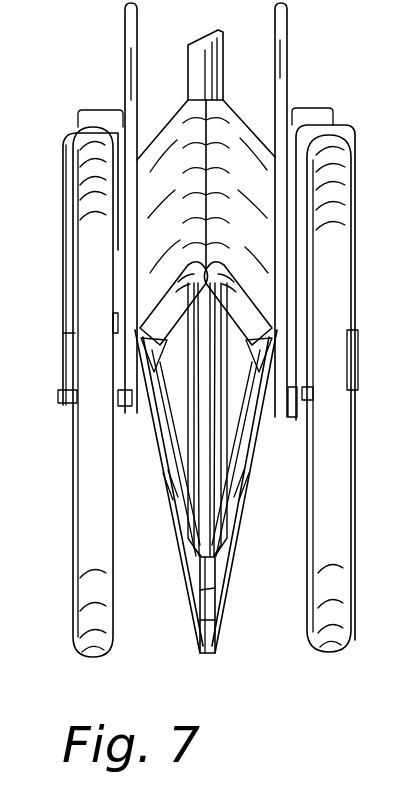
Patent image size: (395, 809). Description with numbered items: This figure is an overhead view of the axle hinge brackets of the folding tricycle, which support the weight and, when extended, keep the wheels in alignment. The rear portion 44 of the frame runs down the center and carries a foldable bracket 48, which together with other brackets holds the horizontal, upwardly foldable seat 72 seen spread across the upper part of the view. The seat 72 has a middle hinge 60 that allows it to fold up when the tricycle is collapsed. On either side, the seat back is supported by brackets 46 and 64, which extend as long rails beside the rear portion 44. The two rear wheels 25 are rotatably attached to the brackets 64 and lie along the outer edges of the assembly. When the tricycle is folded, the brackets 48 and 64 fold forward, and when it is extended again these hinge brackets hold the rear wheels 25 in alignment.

The rear wheels 25 is at (85, 542).
The rear portion 44 is at (200, 422).
The brackets 46 is at (126, 60).
The foldable bracket 48 is at (200, 655).
The middle hinge 60 is at (190, 306).
The brackets 64 is at (137, 378).
The seat 72 is at (152, 180).